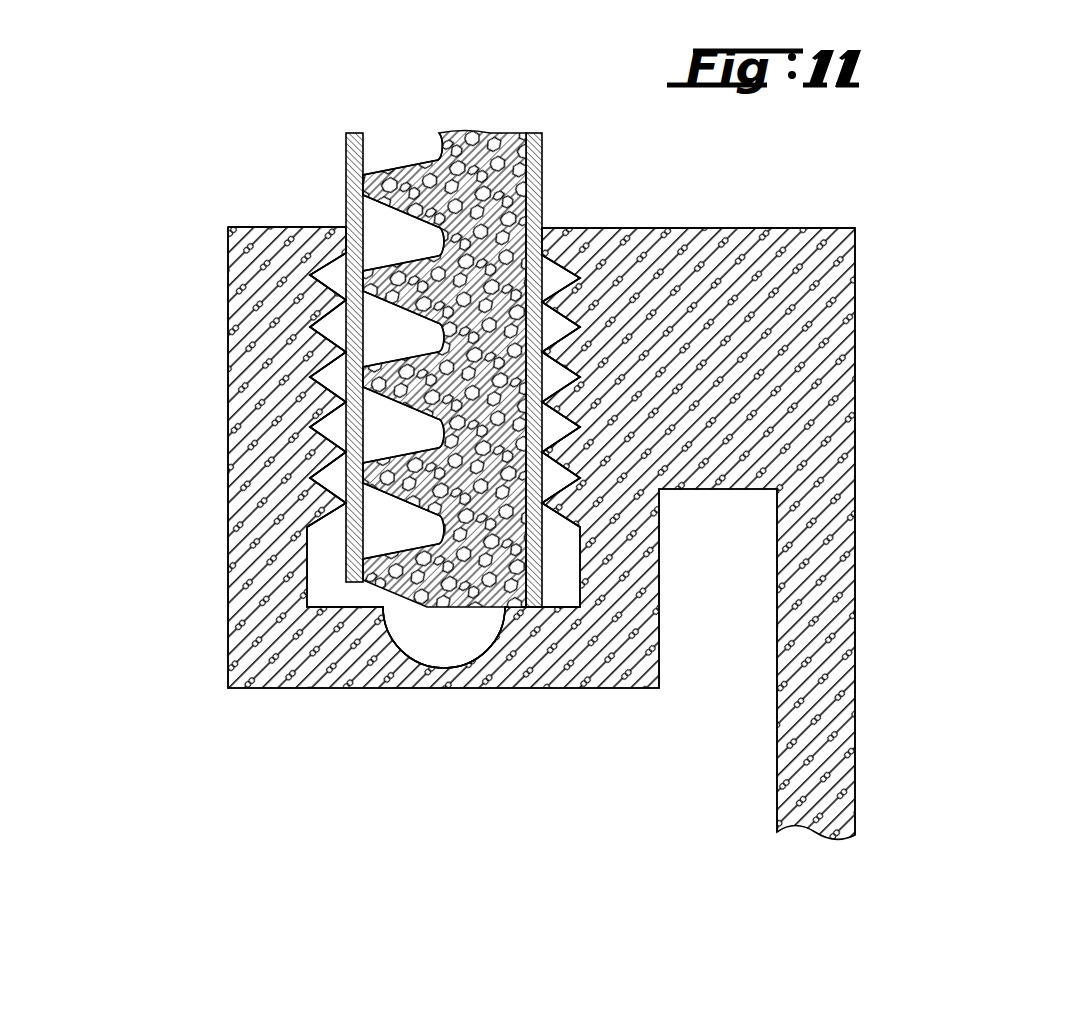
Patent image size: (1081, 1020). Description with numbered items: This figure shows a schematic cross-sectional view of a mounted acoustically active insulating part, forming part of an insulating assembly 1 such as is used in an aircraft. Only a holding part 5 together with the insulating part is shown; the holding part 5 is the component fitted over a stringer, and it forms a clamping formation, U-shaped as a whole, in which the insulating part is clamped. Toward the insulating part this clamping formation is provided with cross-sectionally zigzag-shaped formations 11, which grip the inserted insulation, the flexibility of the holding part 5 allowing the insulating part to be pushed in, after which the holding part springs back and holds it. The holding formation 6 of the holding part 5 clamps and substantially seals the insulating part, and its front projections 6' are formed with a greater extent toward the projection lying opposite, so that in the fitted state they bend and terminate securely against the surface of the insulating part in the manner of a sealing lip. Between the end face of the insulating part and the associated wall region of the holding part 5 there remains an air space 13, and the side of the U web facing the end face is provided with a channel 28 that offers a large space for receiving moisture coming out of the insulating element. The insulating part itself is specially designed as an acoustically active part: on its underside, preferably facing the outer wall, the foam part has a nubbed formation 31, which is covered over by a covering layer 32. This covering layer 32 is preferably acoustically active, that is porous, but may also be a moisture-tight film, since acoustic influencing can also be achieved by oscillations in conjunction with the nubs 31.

The insulating assembly 1 is at (969, 672).
The holding part 5 is at (833, 313).
The holding formation 6 is at (418, 376).
The front projection 6' is at (539, 177).
The zigzag-shaped formation 11 is at (345, 307).
The air space 13 is at (540, 605).
The channel 28 is at (483, 657).
The nubbed formation 31 is at (398, 183).
The covering layer 32 is at (545, 265).